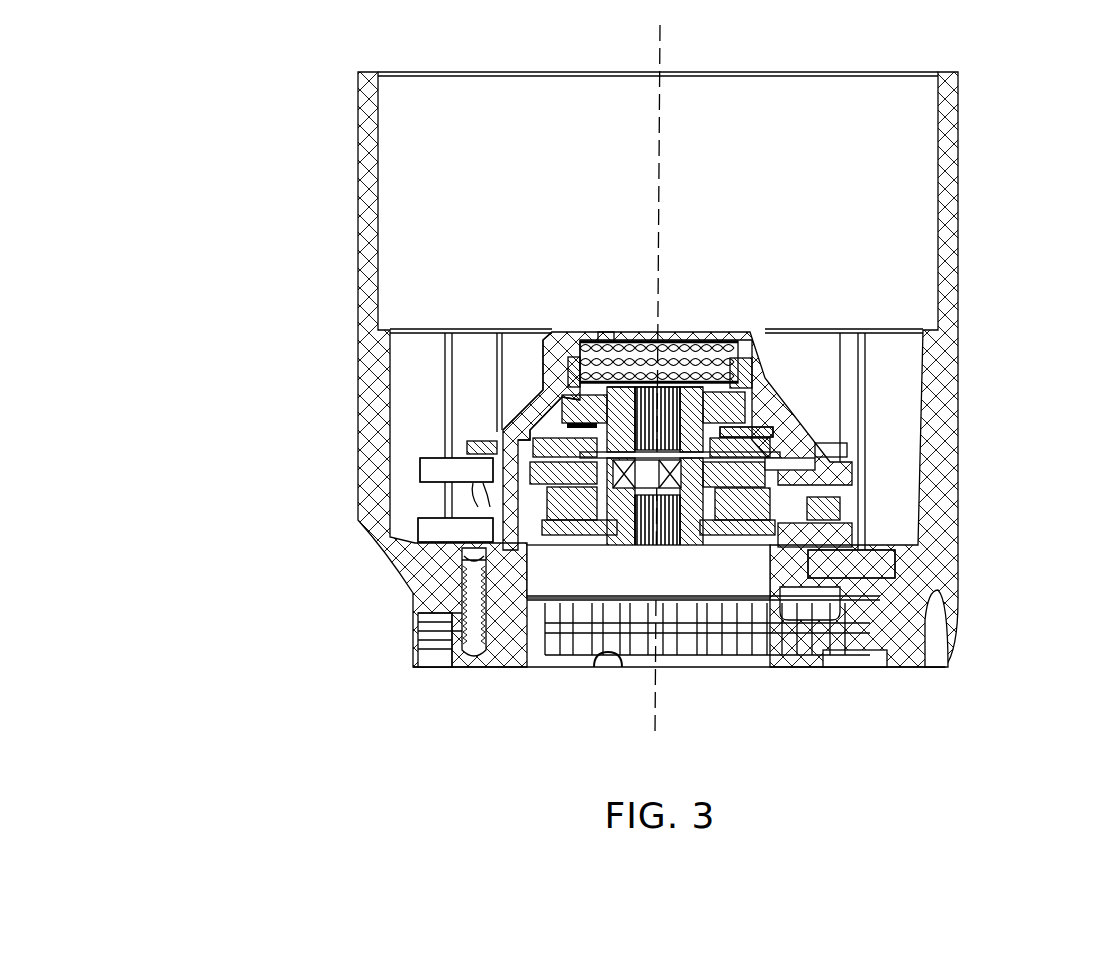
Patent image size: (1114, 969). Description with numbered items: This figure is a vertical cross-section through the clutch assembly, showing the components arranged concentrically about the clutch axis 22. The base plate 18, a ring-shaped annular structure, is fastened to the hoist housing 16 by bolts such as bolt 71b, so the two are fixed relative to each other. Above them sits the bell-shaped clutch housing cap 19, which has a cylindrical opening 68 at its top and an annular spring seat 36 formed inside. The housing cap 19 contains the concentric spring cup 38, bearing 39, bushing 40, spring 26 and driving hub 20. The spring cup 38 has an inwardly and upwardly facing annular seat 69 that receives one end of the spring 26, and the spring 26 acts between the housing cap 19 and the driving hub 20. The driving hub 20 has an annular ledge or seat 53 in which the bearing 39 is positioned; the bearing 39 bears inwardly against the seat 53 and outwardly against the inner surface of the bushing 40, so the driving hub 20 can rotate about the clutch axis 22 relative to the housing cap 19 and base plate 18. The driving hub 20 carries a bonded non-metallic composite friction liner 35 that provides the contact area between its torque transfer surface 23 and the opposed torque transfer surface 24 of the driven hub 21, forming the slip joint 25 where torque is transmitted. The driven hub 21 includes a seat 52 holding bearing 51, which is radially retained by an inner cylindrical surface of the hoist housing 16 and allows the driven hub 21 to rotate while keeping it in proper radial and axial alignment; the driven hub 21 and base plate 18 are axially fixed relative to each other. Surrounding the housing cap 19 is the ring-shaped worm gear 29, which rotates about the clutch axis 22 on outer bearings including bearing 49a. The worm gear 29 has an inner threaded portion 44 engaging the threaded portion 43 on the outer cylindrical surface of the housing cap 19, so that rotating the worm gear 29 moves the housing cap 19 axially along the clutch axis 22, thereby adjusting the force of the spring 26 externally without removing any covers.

The hoist housing 16 is at (950, 326).
The base plate 18 is at (905, 655).
The clutch housing cap 19 is at (757, 333).
The driving hub 20 is at (720, 435).
The driven hub 21 is at (722, 483).
The clutch axis 22 is at (670, 42).
The torque transfer surface 23 is at (630, 547).
The torque transfer surface 24 is at (577, 455).
The slip joint 25 is at (527, 463).
The spring 26 is at (707, 333).
The worm gear 29 is at (473, 507).
The friction liner 35 is at (757, 467).
The annular spring seat 36 is at (672, 340).
The spring cup 38 is at (590, 410).
The bearing 39 is at (562, 412).
The bushing 40 is at (553, 390).
The threaded portion 43 is at (487, 483).
The inner threaded portion 44 is at (555, 478).
The outer bearing 49a is at (407, 465).
The bearing 51 is at (757, 513).
The seat 52 is at (722, 502).
The seat 53 is at (553, 390).
The cylindrical opening 68 is at (607, 326).
The annular seat 69 is at (582, 353).
The bolt 71b is at (468, 600).